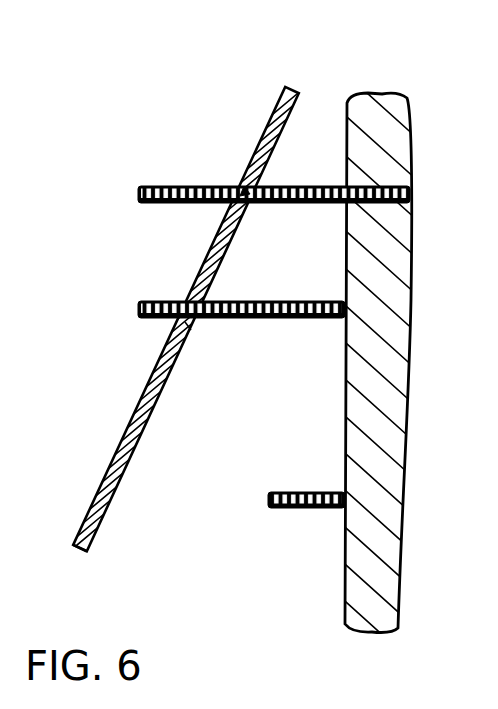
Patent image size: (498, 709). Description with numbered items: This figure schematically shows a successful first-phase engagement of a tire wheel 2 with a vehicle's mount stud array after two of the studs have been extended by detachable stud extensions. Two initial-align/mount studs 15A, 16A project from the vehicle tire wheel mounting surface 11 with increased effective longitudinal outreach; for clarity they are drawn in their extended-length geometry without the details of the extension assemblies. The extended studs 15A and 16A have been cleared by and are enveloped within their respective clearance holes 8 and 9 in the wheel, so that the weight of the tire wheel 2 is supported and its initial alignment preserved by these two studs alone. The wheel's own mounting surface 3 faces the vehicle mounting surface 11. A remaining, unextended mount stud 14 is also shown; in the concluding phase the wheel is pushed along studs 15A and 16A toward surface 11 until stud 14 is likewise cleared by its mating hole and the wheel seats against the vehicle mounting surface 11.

The tire wheel 2 is at (290, 88).
The tire wheel mounting surface 3 is at (97, 538).
The clearance hole 8 is at (187, 338).
The clearance hole 9 is at (243, 184).
The vehicle tire wheel mounting surface 11 is at (343, 375).
The mount stud 14 is at (315, 510).
The initial-align/mount stud 15A is at (316, 319).
The initial-align/mount stud 16A is at (331, 204).